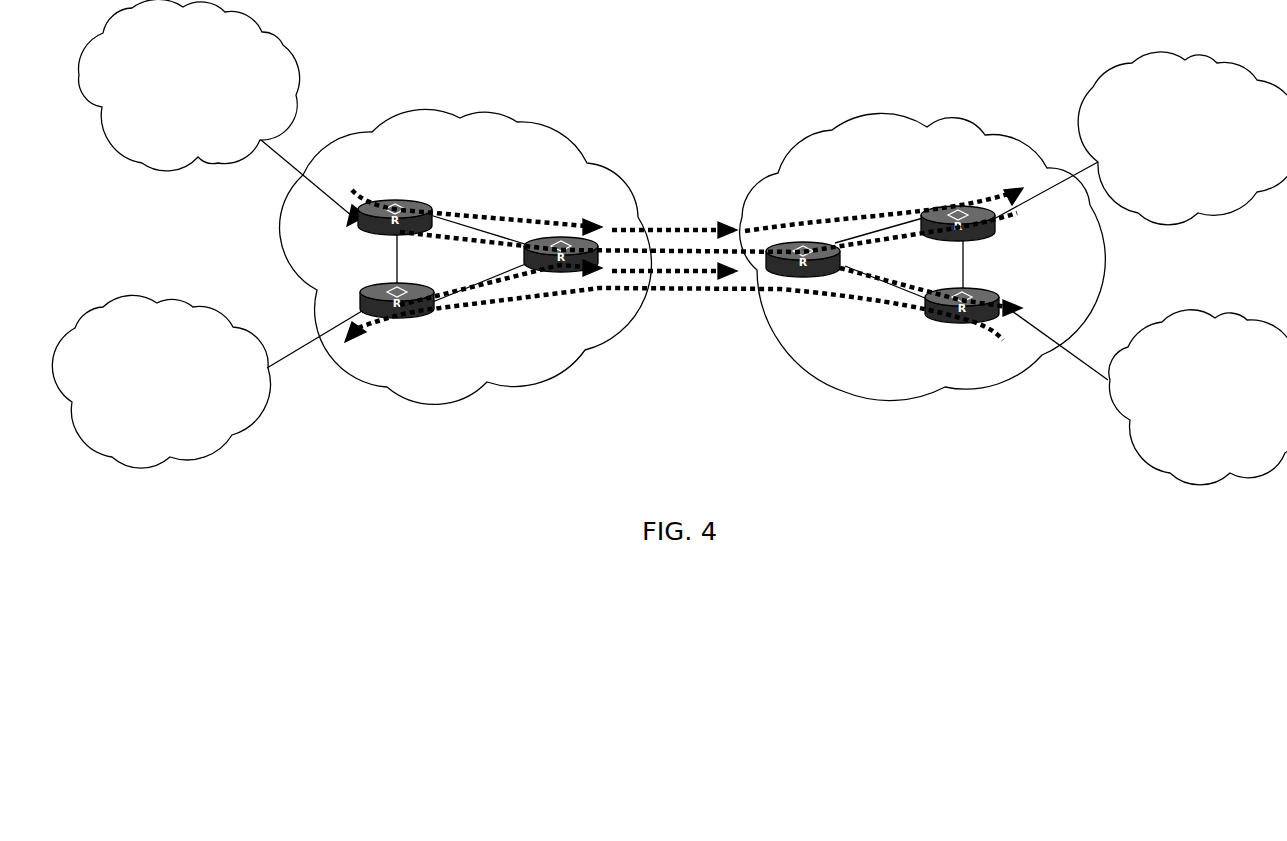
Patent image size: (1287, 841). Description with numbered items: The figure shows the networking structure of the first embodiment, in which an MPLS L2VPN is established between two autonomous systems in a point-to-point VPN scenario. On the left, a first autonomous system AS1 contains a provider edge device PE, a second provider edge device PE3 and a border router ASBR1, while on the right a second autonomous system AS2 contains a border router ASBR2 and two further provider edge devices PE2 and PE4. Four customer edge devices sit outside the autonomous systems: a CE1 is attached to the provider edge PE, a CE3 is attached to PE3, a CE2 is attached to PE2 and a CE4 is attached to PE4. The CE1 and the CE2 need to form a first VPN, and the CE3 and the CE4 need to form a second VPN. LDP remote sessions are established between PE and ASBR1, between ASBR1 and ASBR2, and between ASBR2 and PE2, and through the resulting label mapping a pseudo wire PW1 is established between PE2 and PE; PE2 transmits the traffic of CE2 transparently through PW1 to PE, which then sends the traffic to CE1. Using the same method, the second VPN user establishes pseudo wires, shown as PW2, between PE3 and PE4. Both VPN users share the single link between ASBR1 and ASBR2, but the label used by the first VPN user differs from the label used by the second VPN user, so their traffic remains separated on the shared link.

The element CE1 is at (189, 85).
The element CE2 is at (1182, 138).
The element CE3 is at (161, 381).
The element CE4 is at (1198, 397).
The element AS1 is at (466, 256).
The element AS2 is at (923, 256).
The PE1 PE is at (395, 200).
The element PE2 is at (958, 208).
The element PE3 is at (397, 320).
The element PE4 is at (962, 324).
The element ASBR1 is at (573, 234).
The element ASBR2 is at (809, 236).
The element PW1 is at (677, 251).
The element PW2 is at (668, 290).